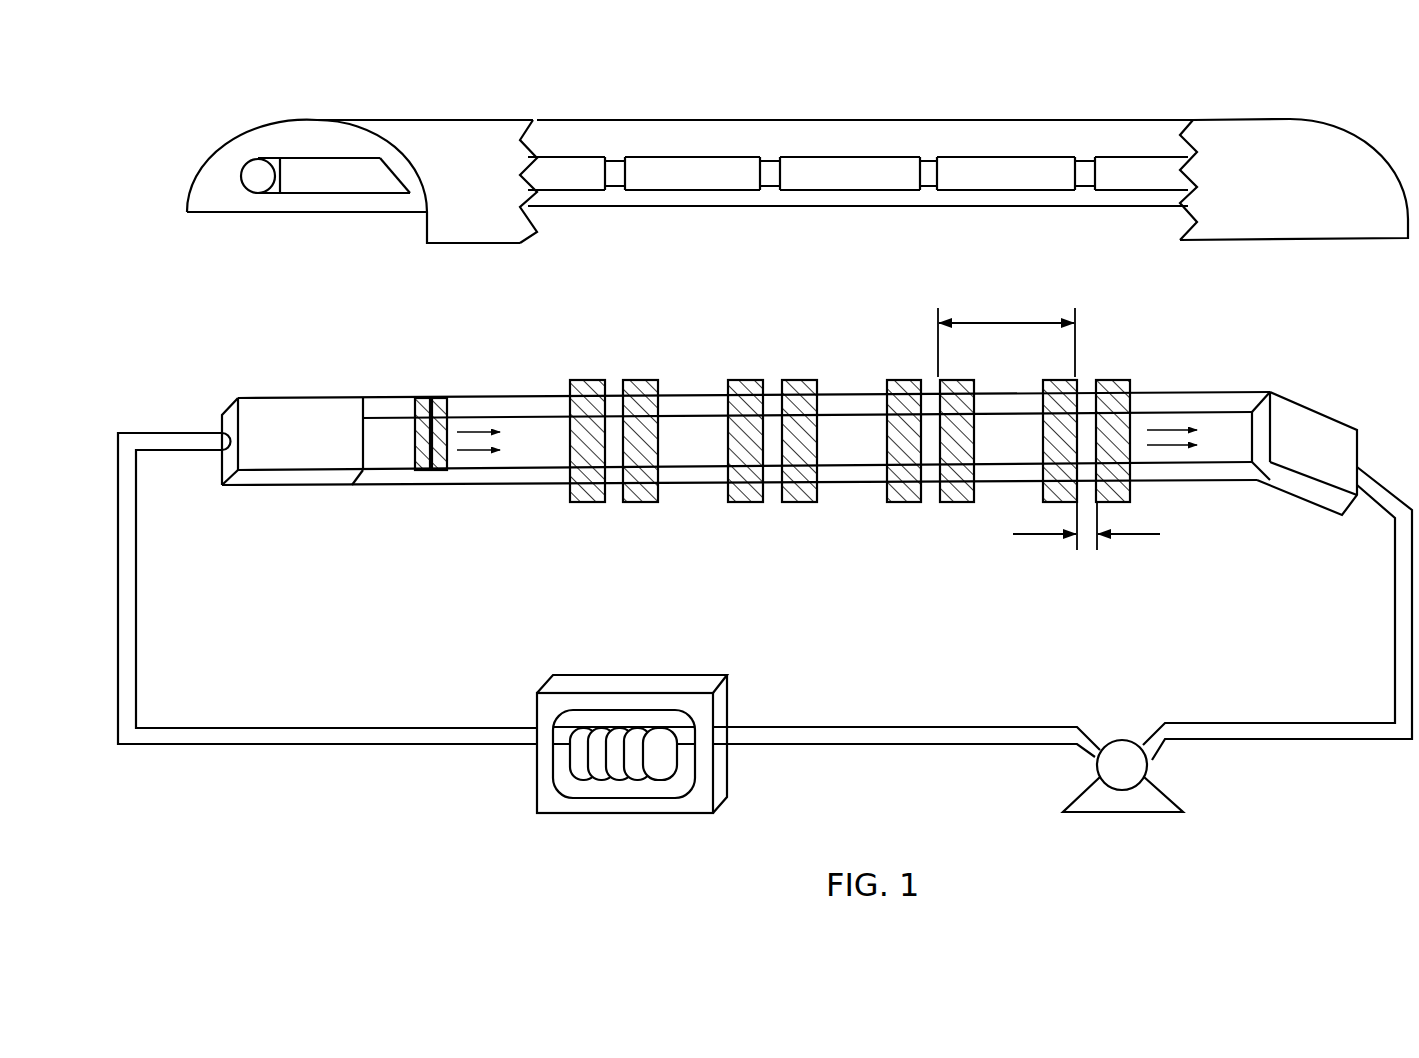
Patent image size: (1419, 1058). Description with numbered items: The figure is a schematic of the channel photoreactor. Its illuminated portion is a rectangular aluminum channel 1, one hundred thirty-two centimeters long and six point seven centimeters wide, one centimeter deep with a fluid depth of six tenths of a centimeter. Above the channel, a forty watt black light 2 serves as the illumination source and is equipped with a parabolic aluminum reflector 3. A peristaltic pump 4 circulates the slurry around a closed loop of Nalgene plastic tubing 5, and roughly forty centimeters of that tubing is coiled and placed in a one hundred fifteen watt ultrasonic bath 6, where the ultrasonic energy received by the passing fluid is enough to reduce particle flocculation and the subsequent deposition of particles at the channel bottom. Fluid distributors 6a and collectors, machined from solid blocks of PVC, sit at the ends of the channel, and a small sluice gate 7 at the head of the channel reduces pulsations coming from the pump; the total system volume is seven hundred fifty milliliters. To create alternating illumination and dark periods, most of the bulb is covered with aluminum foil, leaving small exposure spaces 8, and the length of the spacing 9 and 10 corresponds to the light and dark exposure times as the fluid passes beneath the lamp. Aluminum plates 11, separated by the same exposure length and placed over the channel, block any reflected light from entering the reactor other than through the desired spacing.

The rectangular aluminum channel 1 is at (789, 443).
The black light 2 is at (290, 197).
The parabolic aluminum reflector 3 is at (548, 120).
The peristaltic pump 4 is at (1117, 813).
The plastic tubing 5 is at (895, 742).
The ultrasonic bath 6 is at (613, 815).
The fluid distributor 6a is at (308, 496).
The sluice gate 7 is at (425, 476).
The exposure space 8 is at (767, 189).
The spacing 9 is at (1086, 543).
The spacing 10 is at (1006, 332).
The aluminum plate 11 is at (800, 508).